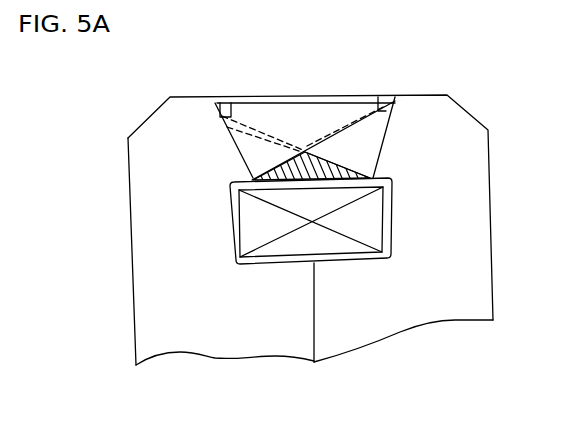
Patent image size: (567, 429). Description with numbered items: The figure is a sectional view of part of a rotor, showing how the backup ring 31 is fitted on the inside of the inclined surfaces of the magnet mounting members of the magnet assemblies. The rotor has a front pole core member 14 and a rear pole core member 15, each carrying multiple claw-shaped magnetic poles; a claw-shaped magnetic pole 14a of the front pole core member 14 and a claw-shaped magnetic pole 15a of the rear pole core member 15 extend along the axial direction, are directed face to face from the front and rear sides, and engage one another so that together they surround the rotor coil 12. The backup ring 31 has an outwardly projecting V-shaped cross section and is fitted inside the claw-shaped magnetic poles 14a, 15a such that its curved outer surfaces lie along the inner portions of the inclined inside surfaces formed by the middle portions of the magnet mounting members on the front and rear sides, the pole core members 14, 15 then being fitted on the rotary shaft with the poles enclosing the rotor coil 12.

The rotor coil 12 is at (388, 202).
The front pole core member 14 is at (450, 133).
The claw-shaped magnetic pole 14a is at (362, 155).
The rear pole core member 15 is at (157, 150).
The claw-shaped magnetic pole 15a is at (243, 152).
The backup ring 31 is at (306, 165).